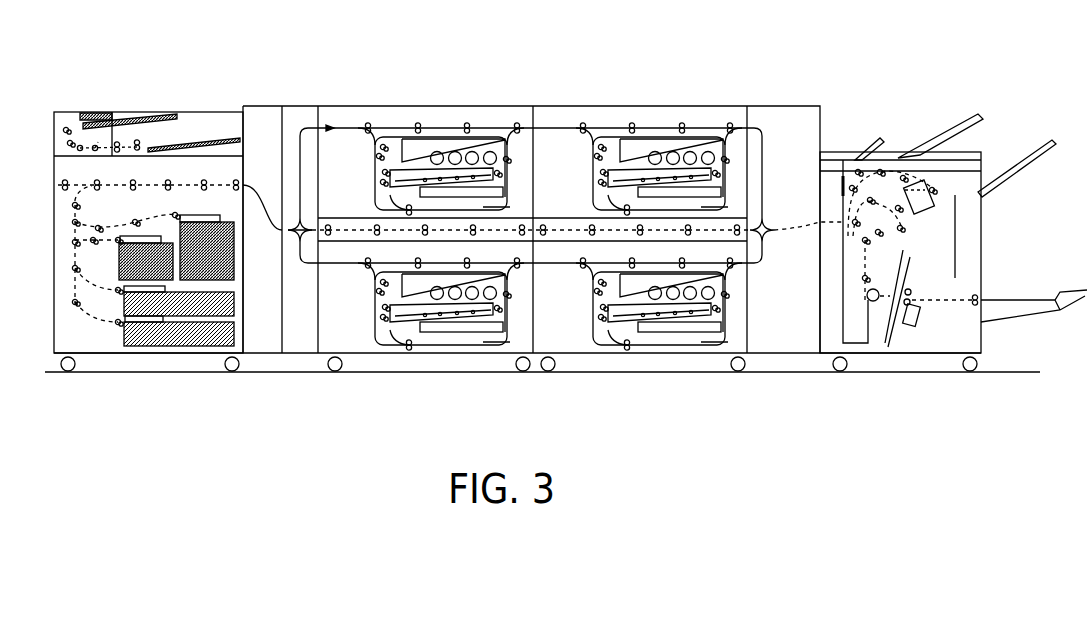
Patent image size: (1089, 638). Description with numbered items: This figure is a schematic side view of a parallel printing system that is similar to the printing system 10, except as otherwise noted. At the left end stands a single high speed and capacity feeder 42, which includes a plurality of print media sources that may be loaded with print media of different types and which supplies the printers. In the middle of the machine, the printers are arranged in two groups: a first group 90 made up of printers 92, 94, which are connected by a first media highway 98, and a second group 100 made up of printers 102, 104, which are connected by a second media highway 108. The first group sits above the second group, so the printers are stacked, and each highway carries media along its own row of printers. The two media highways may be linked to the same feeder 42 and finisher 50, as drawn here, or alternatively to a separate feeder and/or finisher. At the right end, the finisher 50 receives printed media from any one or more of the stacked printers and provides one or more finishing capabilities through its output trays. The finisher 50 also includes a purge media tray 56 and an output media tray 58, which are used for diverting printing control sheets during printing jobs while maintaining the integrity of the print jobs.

The printing system 10 is at (131, 76).
The feeder module 42 is at (60, 249).
The finisher 50 is at (905, 142).
The purge media tray 56 is at (862, 347).
The output media tray 58 is at (948, 128).
The first group of printers 90 is at (433, 112).
The printer 92 is at (392, 138).
The printer 94 is at (622, 137).
The first media highway 98 is at (772, 185).
The second group of printers 100 is at (383, 352).
The printer 102 is at (378, 312).
The printer 104 is at (662, 340).
The second media highway 108 is at (752, 266).